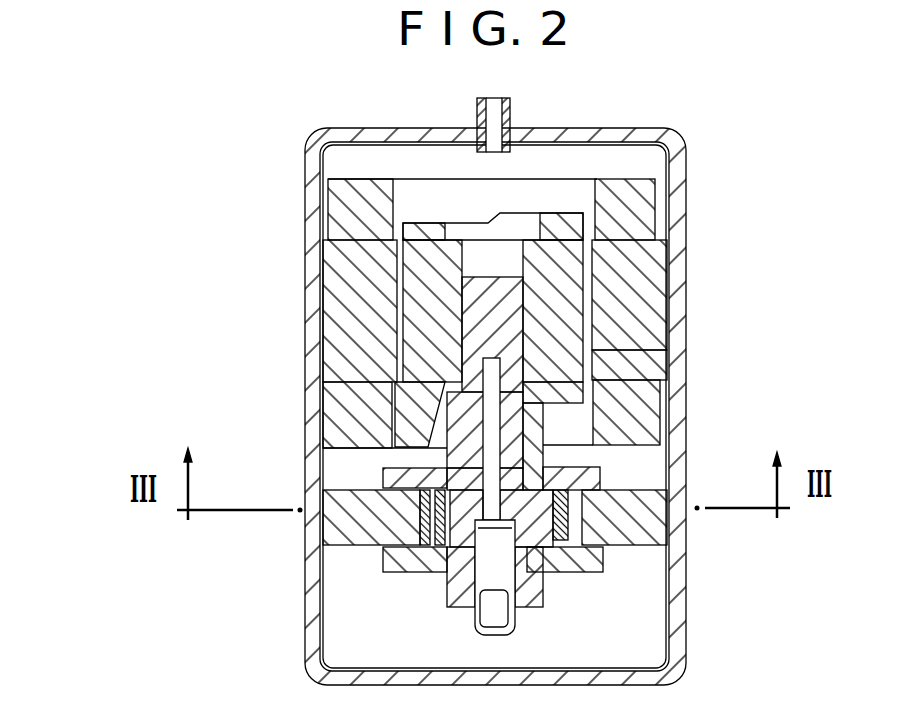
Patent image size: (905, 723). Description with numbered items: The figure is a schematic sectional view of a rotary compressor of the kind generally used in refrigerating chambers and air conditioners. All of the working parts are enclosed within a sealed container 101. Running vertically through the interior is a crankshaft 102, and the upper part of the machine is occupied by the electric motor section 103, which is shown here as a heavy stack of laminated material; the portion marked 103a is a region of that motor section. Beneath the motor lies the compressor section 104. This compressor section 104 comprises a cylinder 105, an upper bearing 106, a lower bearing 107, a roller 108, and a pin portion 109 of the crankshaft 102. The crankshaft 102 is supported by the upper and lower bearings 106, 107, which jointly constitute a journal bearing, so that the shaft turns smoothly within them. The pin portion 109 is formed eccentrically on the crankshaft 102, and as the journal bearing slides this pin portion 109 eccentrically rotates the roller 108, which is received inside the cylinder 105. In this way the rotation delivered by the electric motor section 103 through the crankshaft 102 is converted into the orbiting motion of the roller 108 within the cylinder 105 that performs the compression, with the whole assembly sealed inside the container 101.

The sealed container 101 is at (686, 213).
The crankshaft 102 is at (465, 312).
The electric motor section 103 is at (668, 302).
The core lower portion 103a is at (668, 349).
The compressor section 104 is at (423, 510).
The cylinder 105 is at (672, 508).
The upper bearing 106 is at (383, 470).
The lower bearing 107 is at (457, 605).
The roller 108 is at (440, 560).
The pin portion 109 is at (460, 508).